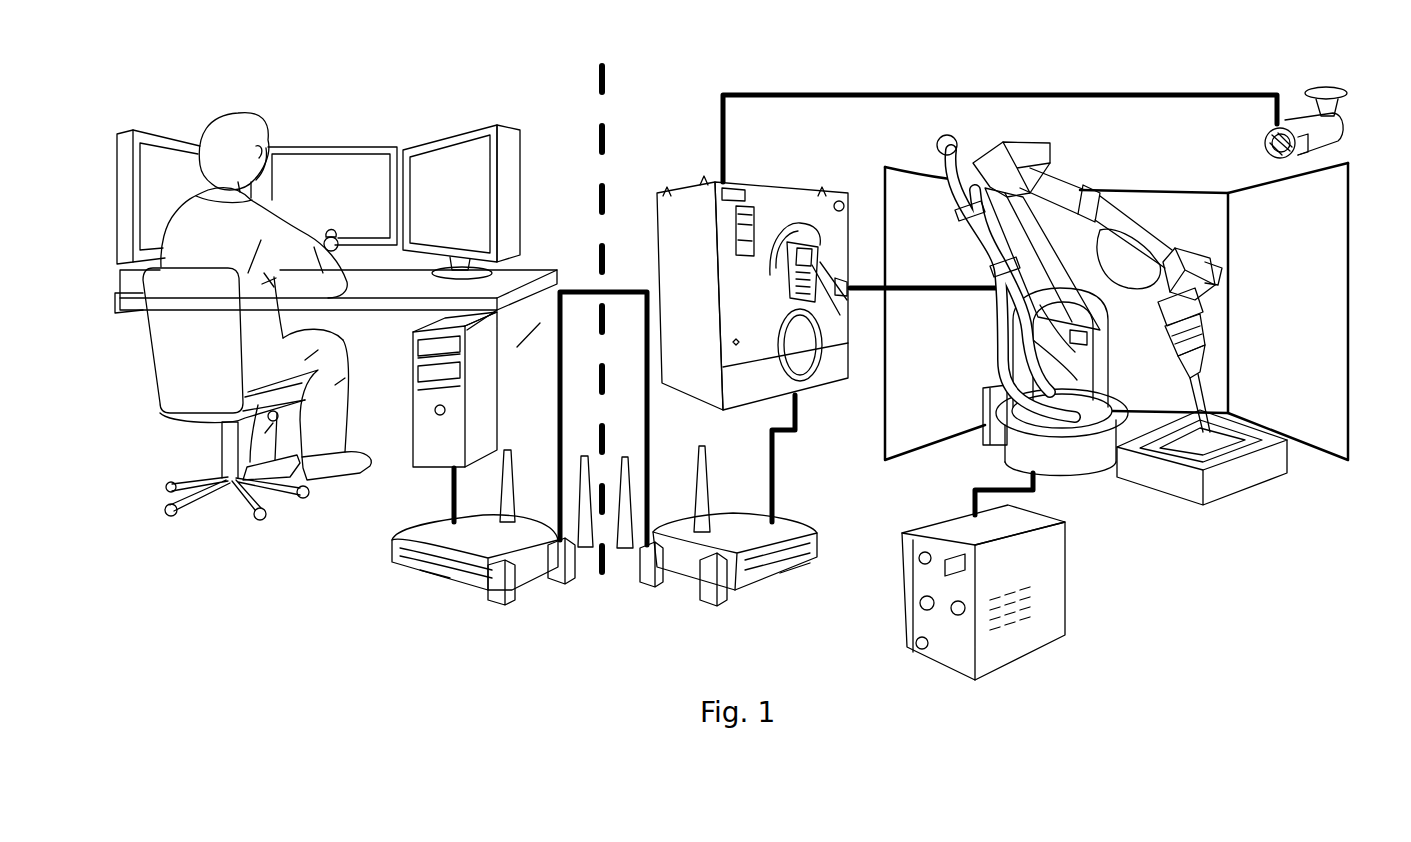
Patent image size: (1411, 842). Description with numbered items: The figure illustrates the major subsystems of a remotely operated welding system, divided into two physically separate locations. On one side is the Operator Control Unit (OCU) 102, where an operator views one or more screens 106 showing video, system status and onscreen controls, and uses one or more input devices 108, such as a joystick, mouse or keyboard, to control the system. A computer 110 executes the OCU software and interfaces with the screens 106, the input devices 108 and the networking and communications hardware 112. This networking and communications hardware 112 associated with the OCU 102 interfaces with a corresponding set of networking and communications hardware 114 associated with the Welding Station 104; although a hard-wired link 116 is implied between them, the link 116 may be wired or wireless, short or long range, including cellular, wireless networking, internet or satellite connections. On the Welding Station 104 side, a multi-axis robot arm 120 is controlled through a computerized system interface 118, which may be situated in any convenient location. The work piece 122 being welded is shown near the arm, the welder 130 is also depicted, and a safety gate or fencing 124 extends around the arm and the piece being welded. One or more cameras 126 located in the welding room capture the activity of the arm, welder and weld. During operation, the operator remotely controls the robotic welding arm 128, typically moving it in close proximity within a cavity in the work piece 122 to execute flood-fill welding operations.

The Operator Control Unit (OCU) 102 is at (220, 296).
The Welding Station 104 is at (636, 320).
The screens 106 is at (318, 197).
The input devices 108 is at (338, 308).
The computer 110 is at (434, 417).
The networking and communications hardware 112 is at (478, 527).
The networking and communications hardware 114 is at (717, 532).
The communications link 116 is at (603, 408).
The computerized system interface 118 is at (967, 308).
The multi-axis robot arm 120 is at (1054, 305).
The work piece 122 is at (1211, 459).
The safety gate or fencing 124 is at (1141, 311).
The camera 126 is at (1325, 122).
The robotic welding arm 128 is at (1190, 329).
The welder 130 is at (1008, 576).